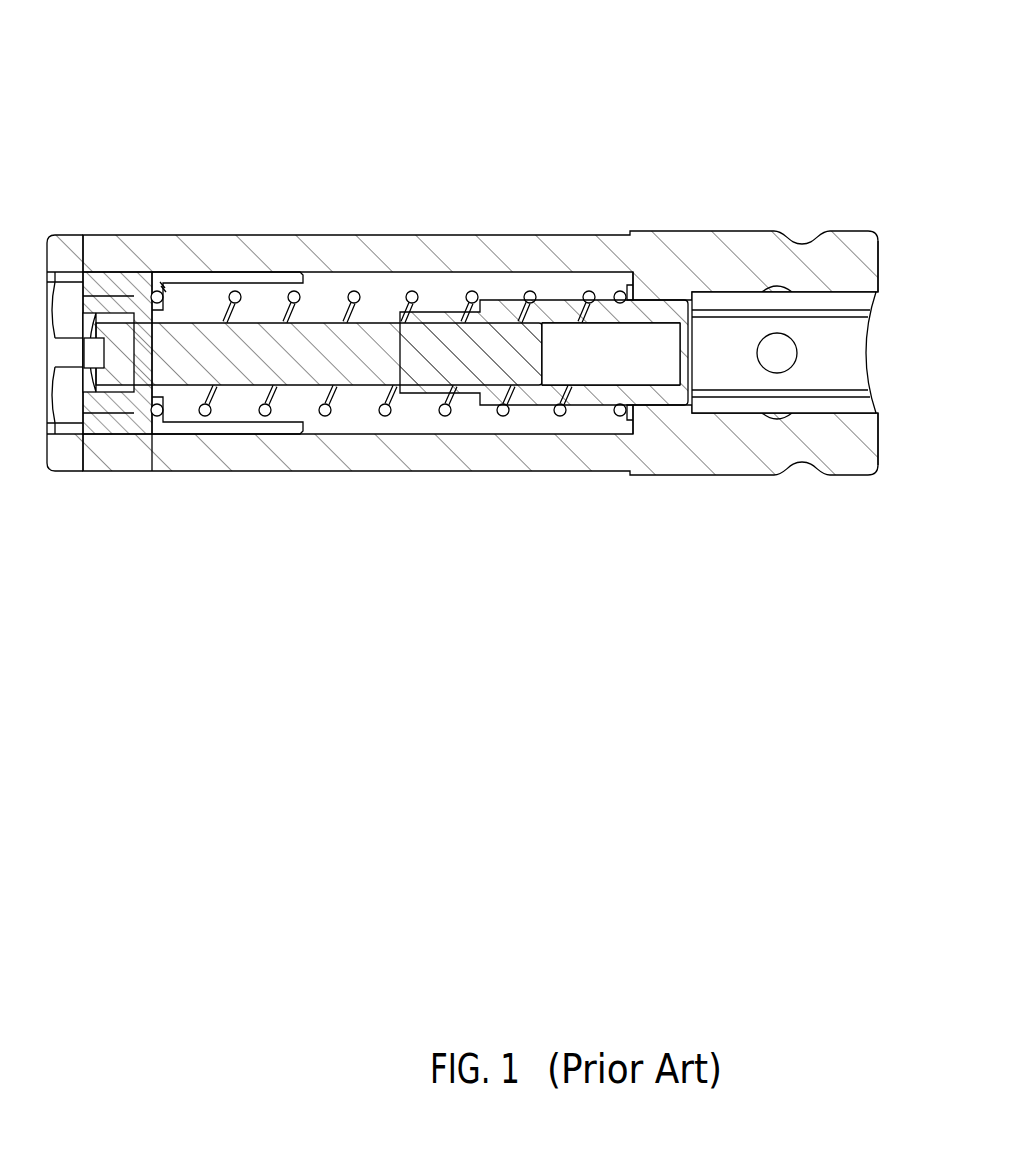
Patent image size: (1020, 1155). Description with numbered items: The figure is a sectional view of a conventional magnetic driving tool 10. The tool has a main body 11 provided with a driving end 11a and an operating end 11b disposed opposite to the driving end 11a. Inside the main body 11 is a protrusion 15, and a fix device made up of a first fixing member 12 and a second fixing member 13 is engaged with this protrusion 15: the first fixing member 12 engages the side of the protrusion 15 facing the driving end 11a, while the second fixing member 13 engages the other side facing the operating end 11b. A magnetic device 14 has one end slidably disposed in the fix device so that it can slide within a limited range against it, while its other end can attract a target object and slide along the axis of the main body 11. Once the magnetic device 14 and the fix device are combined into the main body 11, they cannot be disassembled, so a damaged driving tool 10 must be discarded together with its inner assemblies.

The magnetic driving tool 10 is at (619, 46).
The main body 11 is at (378, 463).
The driving end 11a is at (853, 463).
The operating end 11b is at (122, 463).
The first fixing member 12 is at (685, 410).
The second fixing member 13 is at (626, 288).
The magnetic device 14 is at (158, 293).
The protrusion 15 is at (653, 407).